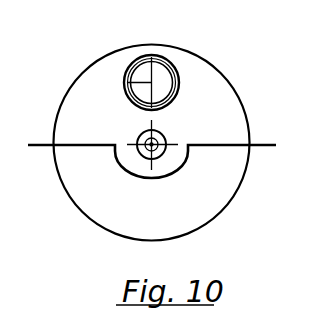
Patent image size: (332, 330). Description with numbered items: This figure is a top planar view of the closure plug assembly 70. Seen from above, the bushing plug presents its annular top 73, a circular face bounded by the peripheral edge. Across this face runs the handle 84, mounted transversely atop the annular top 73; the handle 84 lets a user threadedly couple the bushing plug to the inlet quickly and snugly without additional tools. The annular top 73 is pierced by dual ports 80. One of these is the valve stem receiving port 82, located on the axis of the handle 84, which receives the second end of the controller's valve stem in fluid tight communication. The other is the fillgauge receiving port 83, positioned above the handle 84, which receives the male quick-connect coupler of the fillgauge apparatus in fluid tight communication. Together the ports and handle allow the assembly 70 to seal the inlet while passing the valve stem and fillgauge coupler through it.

The closure plug assembly 70 is at (244, 73).
The annular top 73 is at (212, 121).
The dual ports 80 is at (130, 136).
The valve stem receiving port 82 is at (137, 152).
The fillgauge receiving port 83 is at (174, 60).
The handle 84 is at (266, 143).